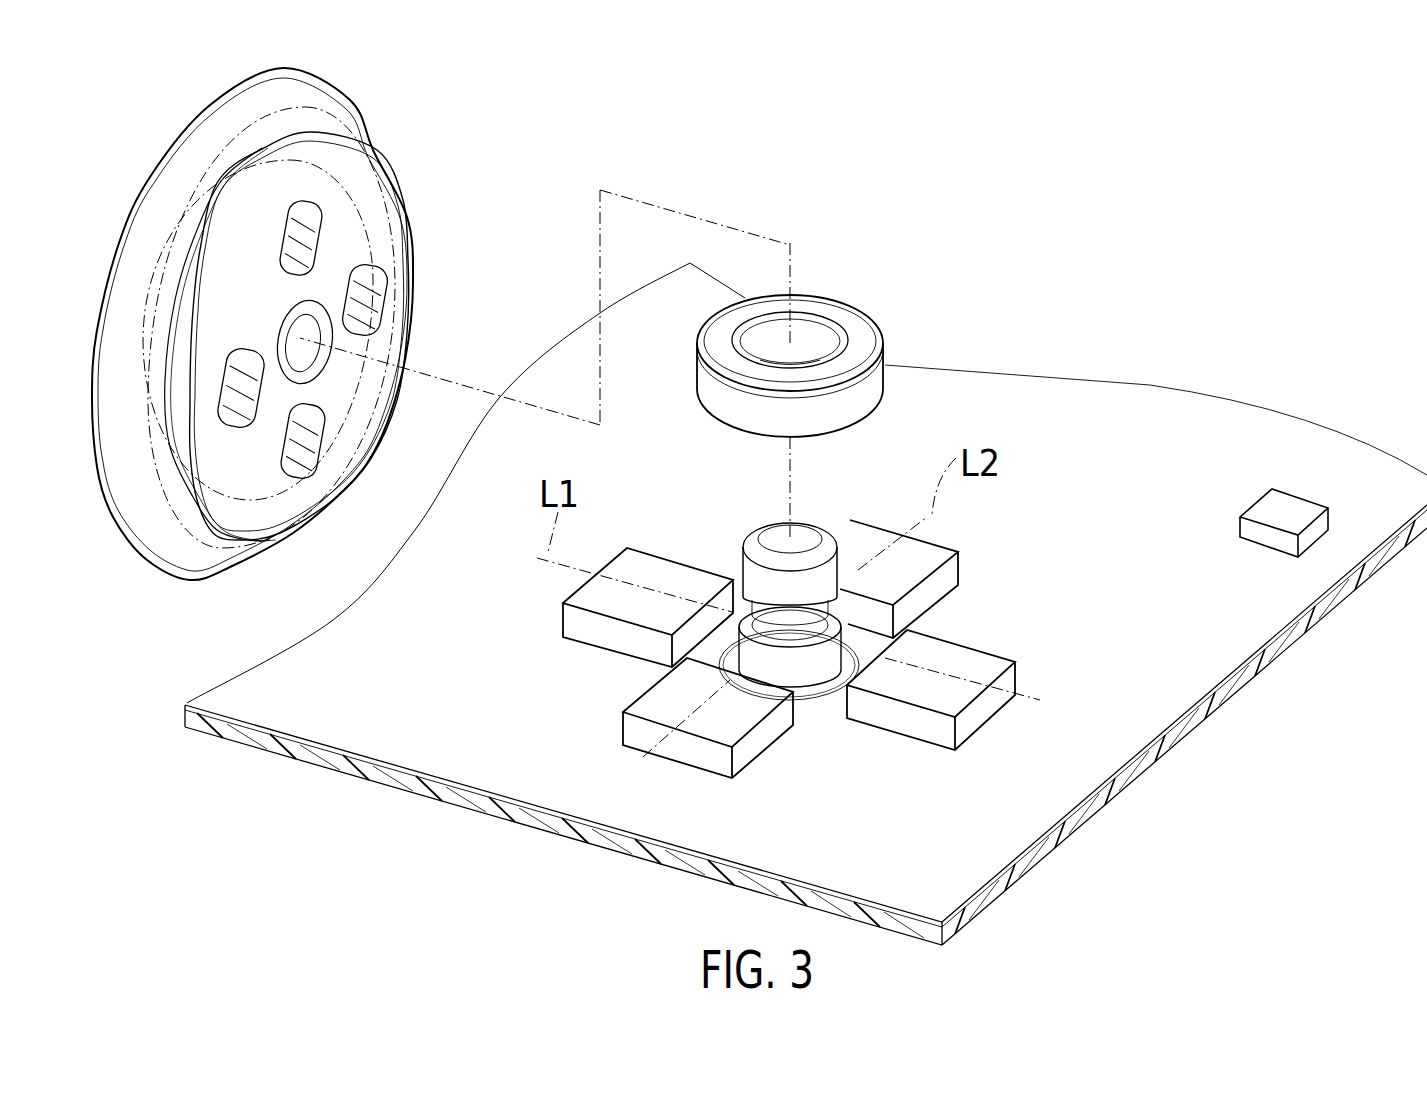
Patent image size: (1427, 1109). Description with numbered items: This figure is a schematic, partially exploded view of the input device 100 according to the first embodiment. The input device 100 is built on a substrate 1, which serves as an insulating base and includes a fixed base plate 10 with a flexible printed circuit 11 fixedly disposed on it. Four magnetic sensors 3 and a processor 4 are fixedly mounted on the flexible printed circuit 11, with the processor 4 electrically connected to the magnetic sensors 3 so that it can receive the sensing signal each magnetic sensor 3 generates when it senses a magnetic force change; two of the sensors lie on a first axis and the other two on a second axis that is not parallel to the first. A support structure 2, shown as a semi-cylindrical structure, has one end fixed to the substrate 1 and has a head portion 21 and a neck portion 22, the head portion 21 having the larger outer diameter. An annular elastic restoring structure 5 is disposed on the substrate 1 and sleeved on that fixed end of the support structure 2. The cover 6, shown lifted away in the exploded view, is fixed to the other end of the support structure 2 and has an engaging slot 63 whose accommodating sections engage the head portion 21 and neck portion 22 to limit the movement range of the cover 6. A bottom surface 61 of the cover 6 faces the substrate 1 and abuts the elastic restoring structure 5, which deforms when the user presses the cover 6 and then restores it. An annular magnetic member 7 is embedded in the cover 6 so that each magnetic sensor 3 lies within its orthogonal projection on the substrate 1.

The input device 100 is at (1210, 350).
The substrate 1 is at (771, 725).
The fixed base plate 10 is at (150, 648).
The flexible printed circuit 11 is at (252, 705).
The support structure 2 is at (799, 607).
The head portion 21 is at (806, 533).
The neck portion 22 is at (797, 628).
The magnetic sensor 3 is at (561, 621).
The processor 4 is at (1258, 504).
The elastic restoring structure 5 is at (866, 320).
The cover 6 is at (269, 328).
The bottom surface 61 is at (283, 500).
The engaging slot 63 is at (305, 362).
The magnetic member 7 is at (170, 263).